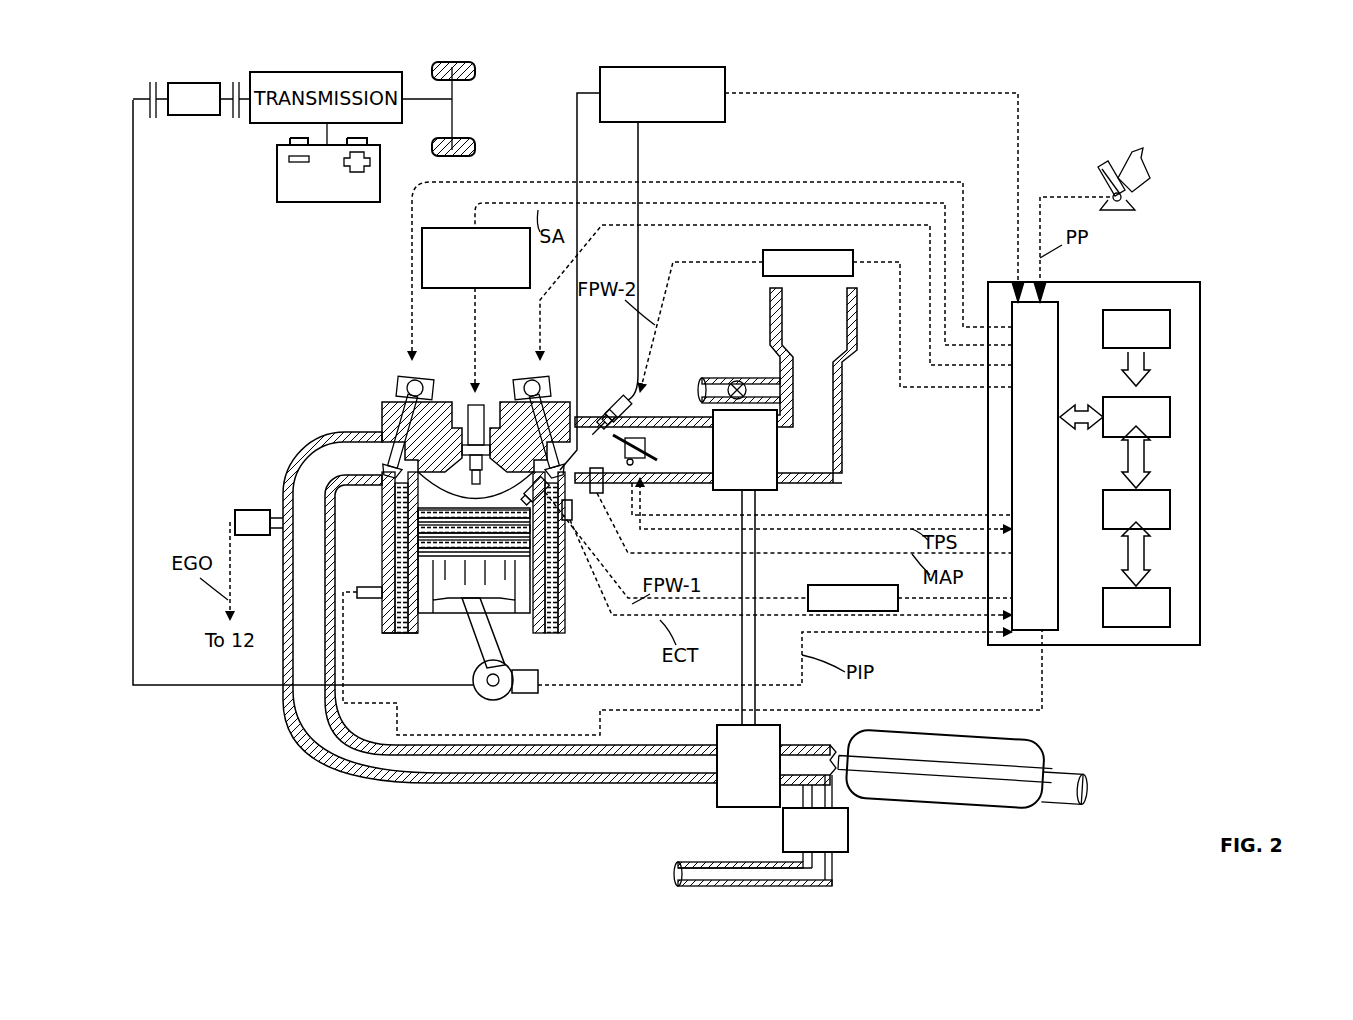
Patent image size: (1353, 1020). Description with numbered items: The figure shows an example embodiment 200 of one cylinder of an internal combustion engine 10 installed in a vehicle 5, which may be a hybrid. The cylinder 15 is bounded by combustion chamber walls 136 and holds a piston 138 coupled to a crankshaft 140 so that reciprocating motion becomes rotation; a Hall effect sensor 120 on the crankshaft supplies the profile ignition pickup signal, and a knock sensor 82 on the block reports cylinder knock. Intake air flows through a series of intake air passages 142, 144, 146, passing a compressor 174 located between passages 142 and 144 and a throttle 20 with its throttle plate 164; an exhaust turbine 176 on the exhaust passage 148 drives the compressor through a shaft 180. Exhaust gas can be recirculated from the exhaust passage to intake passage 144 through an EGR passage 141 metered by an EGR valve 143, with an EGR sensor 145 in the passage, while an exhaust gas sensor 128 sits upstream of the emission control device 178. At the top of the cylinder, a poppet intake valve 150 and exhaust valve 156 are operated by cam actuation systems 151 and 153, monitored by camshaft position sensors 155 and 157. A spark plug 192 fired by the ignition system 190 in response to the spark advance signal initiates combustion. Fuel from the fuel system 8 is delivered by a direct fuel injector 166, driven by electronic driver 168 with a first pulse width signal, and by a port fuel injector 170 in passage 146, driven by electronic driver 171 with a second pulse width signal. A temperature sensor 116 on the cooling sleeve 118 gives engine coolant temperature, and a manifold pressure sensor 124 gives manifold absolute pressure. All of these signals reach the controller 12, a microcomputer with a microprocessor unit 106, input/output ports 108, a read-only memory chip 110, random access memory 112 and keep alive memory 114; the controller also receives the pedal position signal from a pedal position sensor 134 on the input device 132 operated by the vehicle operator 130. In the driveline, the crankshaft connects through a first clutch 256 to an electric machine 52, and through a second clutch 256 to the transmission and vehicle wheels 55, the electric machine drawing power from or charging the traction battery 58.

The vehicle 5 is at (1298, 262).
The fuel system 8 is at (662, 94).
The internal combustion engine 10 is at (300, 336).
The controller 12 is at (1195, 282).
The cylinder 15 is at (395, 510).
The throttle 20 is at (635, 438).
The electric machine 52 is at (186, 116).
The vehicle wheels 55 is at (468, 80).
The traction battery 58 is at (320, 203).
The knock sensor 82 is at (378, 587).
The microprocessor unit 106 is at (1172, 415).
The input/output ports 108 is at (1060, 305).
The read-only memory chip 110 is at (1172, 325).
The random access memory 112 is at (1172, 508).
The keep alive memory 114 is at (1172, 606).
The temperature sensor 116 is at (575, 560).
The cooling sleeve 118 is at (560, 590).
The Hall effect sensor 120 is at (530, 693).
The manifold absolute pressure sensor 124 is at (605, 500).
The exhaust gas sensor 128 is at (235, 512).
The vehicle operator 130 is at (1148, 163).
The input device 132 is at (1100, 172).
The pedal position sensor 134 is at (1128, 198).
The combustion chamber walls 136 is at (420, 638).
The piston 138 is at (460, 600).
The crankshaft 140 is at (485, 698).
The EGR passage 141 is at (735, 380).
The intake air passage 142 is at (813, 385).
The EGR valve 143 is at (742, 382).
The intake air passage 144 is at (644, 450).
The EGR sensor 145 is at (848, 835).
The intake air passage 146 is at (590, 455).
The exhaust passage 148 is at (500, 607).
The intake valve 150 is at (525, 465).
The cam actuation system 151 is at (527, 375).
The cam actuation system 153 is at (420, 375).
The camshaft position sensor 155 is at (560, 387).
The exhaust valve 156 is at (425, 465).
The camshaft position sensor 157 is at (405, 385).
The throttle plate 164 is at (607, 416).
The fuel injector 166 is at (539, 480).
The electronic driver 168 is at (815, 590).
The fuel injector 170 is at (620, 400).
The electronic driver 171 is at (760, 262).
The compressor 174 is at (745, 450).
The exhaust turbine 176 is at (748, 766).
The emission control device 178 is at (932, 740).
The shaft 180 is at (757, 690).
The ignition system 190 is at (436, 228).
The spark plug 192 is at (466, 420).
The example embodiment 200 is at (1308, 138).
The clutch 256 is at (148, 95).